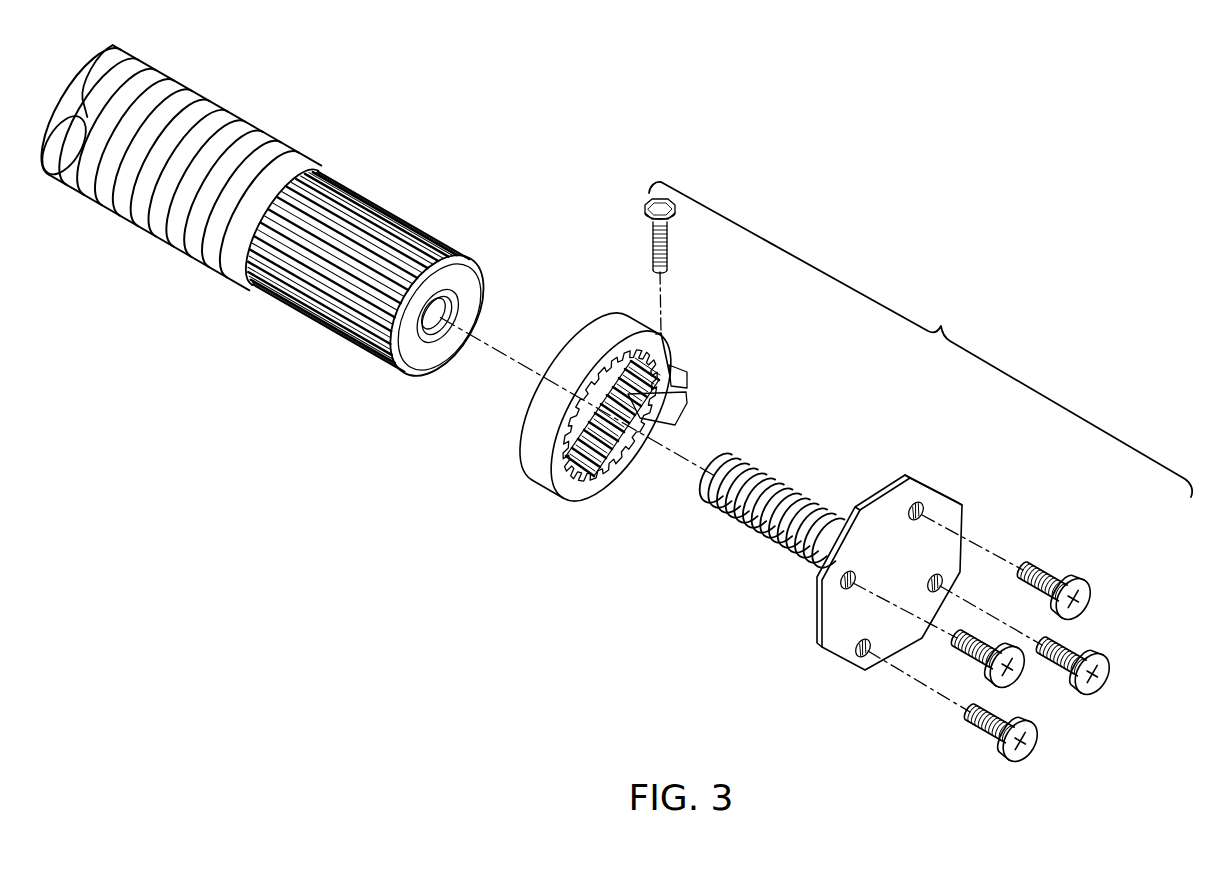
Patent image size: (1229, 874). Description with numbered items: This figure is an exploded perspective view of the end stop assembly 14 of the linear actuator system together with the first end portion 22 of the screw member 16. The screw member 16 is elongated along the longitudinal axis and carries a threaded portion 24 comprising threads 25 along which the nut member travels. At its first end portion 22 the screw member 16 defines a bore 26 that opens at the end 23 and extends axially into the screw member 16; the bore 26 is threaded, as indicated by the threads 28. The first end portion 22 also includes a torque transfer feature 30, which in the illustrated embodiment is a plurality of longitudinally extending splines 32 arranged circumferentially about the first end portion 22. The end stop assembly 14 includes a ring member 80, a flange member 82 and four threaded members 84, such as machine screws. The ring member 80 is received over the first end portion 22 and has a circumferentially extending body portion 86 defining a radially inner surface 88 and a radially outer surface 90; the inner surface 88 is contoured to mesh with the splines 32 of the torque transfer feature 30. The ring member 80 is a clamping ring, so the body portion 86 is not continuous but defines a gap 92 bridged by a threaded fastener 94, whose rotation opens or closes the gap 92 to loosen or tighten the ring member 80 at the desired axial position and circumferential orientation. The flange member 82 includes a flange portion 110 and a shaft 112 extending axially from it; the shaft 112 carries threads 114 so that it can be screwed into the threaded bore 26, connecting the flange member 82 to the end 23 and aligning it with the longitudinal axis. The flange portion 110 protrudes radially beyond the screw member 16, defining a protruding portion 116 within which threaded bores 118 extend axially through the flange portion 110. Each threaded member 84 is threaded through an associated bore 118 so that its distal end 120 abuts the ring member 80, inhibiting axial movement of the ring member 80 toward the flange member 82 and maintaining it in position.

The end stop assembly 14 is at (831, 481).
The screw member 16 is at (247, 120).
The first end portion 22 is at (399, 399).
The end 23 is at (484, 308).
The threaded portion 24 is at (190, 283).
The threads 25 is at (131, 219).
The bore 26 is at (458, 286).
The threads 28 is at (438, 333).
The torque transfer feature 30 is at (404, 208).
The splines 32 is at (358, 200).
The ring member 80 is at (590, 330).
The flange member 82 is at (861, 506).
The threaded members 84 is at (1052, 578).
The circumferentially extending body portion 86 is at (673, 412).
The radially inner surface 88 is at (606, 470).
The radially outer surface 90 is at (524, 452).
The gap 92 is at (687, 381).
The threaded fastener 94 is at (670, 240).
The flange portion 110 is at (942, 508).
The shaft 112 is at (790, 482).
The threads 114 is at (762, 527).
The protruding portion 116 is at (900, 487).
The threaded bores 118 is at (917, 504).
The distal ends 120 is at (955, 640).